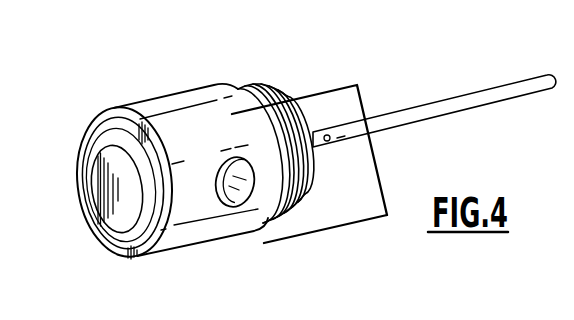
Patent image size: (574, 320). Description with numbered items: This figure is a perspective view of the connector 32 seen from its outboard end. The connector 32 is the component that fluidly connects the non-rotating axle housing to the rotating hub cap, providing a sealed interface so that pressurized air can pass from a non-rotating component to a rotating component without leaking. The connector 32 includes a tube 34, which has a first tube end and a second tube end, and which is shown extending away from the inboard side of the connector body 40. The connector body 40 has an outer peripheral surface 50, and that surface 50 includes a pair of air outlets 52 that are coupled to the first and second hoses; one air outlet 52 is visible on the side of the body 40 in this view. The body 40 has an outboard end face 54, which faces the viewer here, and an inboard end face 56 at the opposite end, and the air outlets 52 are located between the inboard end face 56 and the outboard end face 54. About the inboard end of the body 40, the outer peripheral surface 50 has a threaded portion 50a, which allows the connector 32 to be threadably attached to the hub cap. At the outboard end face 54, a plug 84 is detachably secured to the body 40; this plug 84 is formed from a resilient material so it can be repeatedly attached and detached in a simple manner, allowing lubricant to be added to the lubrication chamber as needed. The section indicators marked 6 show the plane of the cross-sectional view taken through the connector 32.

The connector 32 is at (378, 56).
The tube 34 is at (405, 110).
The connector body 40 is at (216, 168).
The outer peripheral surface 50 is at (166, 96).
The threaded portion 50a is at (299, 197).
The air outlet 52 is at (235, 188).
The outboard end face 54 is at (128, 256).
The inboard end face 56 is at (266, 86).
The plug 84 is at (107, 193).
The section line 6- 6 is at (301, 175).